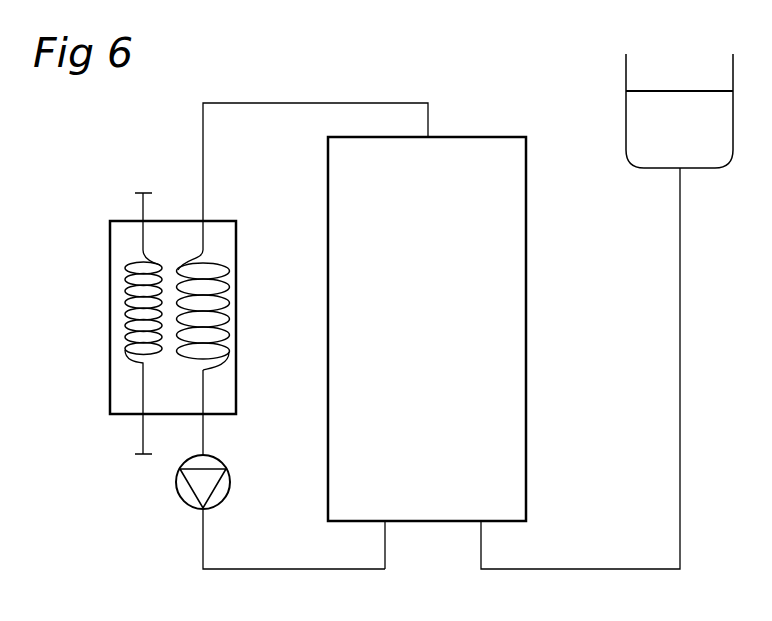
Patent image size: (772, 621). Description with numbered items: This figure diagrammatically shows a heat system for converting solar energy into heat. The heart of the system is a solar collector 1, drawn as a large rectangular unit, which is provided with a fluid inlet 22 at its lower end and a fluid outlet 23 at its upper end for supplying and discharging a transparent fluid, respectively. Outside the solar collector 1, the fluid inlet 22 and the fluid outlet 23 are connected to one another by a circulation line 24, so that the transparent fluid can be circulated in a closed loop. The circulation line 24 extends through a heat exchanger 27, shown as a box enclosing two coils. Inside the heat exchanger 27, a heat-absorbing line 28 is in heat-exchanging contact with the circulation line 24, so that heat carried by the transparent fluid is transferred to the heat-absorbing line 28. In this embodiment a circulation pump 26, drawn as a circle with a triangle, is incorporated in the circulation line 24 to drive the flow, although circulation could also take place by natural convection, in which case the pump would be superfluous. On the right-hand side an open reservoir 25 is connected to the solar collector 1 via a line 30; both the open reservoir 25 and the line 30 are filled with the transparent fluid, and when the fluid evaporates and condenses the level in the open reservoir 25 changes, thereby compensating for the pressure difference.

The solar collector 1 is at (512, 282).
The fluid inlet 22 is at (385, 523).
The fluid outlet 23 is at (430, 137).
The circulation line 24 is at (302, 570).
The open reservoir 25 is at (643, 106).
The circulation pump 26 is at (207, 480).
The heat exchanger 27 is at (119, 383).
The heat-absorbing line 28 is at (140, 288).
The line 30 is at (681, 327).